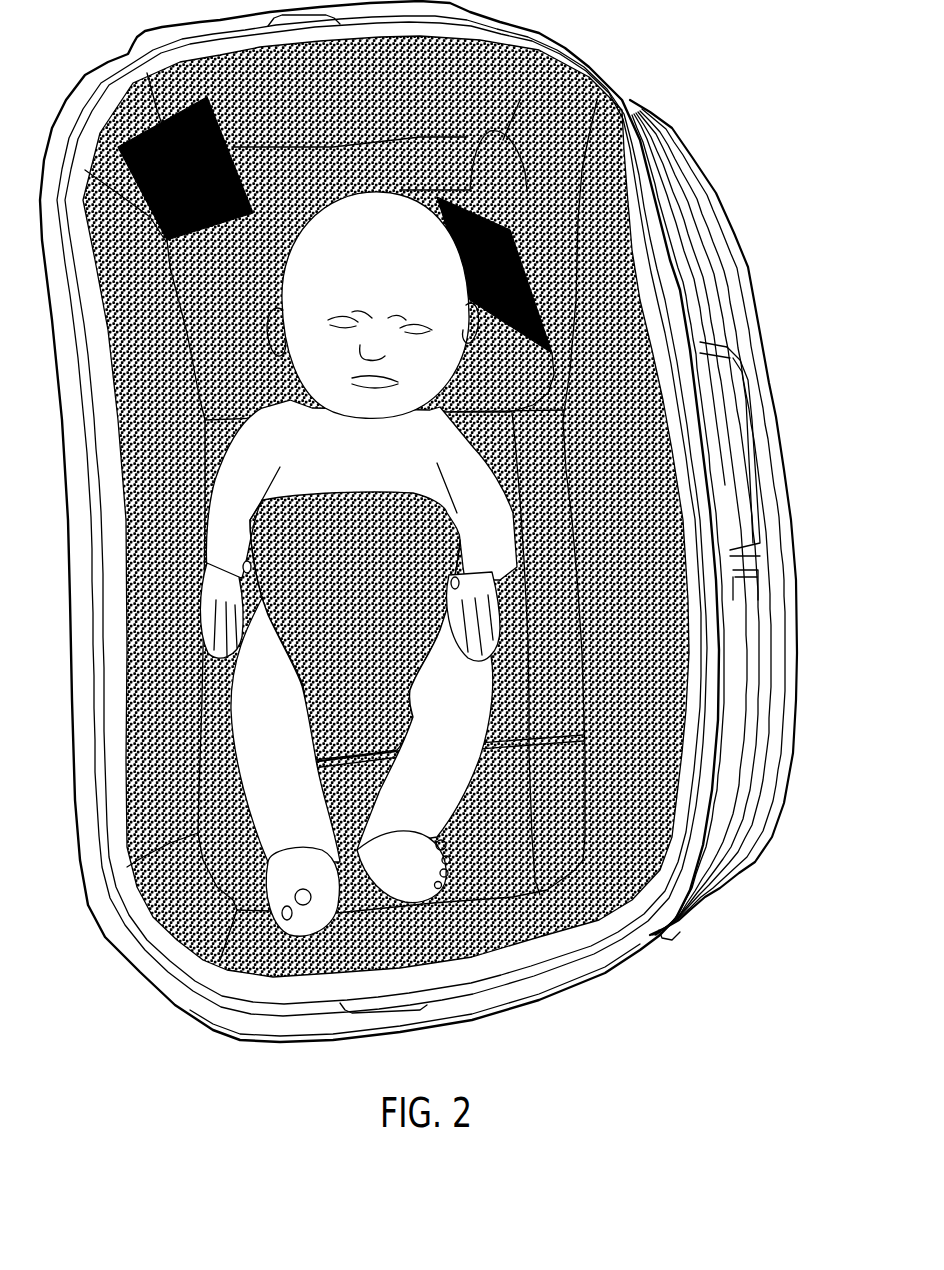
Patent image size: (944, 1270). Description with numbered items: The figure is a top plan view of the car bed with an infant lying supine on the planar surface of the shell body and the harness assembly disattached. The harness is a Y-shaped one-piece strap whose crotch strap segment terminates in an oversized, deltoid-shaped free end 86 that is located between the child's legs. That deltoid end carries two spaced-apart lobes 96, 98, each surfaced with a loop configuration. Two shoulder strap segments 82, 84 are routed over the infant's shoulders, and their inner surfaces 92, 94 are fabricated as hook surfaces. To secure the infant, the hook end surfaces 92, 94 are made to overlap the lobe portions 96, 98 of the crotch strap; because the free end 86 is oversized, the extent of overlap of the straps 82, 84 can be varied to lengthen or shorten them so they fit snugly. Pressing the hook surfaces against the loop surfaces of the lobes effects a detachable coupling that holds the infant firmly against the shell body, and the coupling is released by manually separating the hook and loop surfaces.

The shoulder strap segment 82 is at (622, 497).
The shoulder strap segment 84 is at (277, 276).
The free end of the crotch strap segment 86 is at (397, 620).
The inner surface of shoulder strap segment 92 is at (570, 198).
The inner surface of shoulder strap segment 94 is at (132, 217).
The lobe 96 is at (440, 538).
The lobe 98 is at (253, 520).